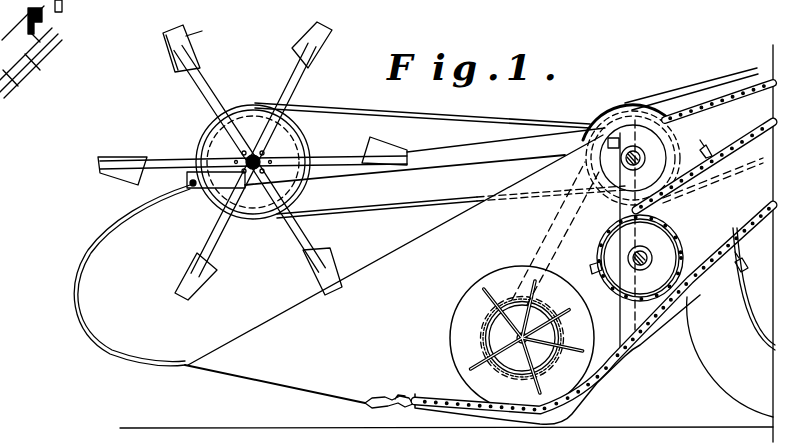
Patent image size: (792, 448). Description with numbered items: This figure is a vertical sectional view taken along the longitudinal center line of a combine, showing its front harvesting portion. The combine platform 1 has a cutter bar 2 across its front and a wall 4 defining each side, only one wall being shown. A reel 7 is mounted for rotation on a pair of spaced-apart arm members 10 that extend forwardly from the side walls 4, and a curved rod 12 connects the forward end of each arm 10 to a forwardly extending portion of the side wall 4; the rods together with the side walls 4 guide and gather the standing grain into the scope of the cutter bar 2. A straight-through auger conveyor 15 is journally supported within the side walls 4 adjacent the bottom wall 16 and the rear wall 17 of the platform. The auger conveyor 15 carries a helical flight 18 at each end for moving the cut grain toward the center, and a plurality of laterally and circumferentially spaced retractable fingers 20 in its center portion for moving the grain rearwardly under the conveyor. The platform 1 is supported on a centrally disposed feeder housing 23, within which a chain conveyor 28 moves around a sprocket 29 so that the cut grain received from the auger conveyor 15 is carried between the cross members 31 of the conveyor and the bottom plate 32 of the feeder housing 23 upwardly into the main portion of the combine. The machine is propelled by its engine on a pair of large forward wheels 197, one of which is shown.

The combine platform 1 is at (379, 249).
The cutter bar 2 is at (378, 399).
The wall 4 is at (440, 230).
The reel 7 is at (252, 161).
The arm member 10 is at (452, 148).
The curved rod 12 is at (85, 253).
The auger conveyor 15 is at (554, 259).
The bottom wall 16 is at (460, 394).
The rear wall 17 is at (618, 212).
The helical flight 18 is at (486, 272).
The retractable fingers 20 is at (478, 340).
The feeder housing 23 is at (710, 95).
The chain conveyor 28 is at (757, 128).
The sprocket 29 is at (670, 240).
The cross members 31 is at (706, 146).
The bottom plate 32 is at (660, 318).
The forward wheel 197 is at (728, 385).